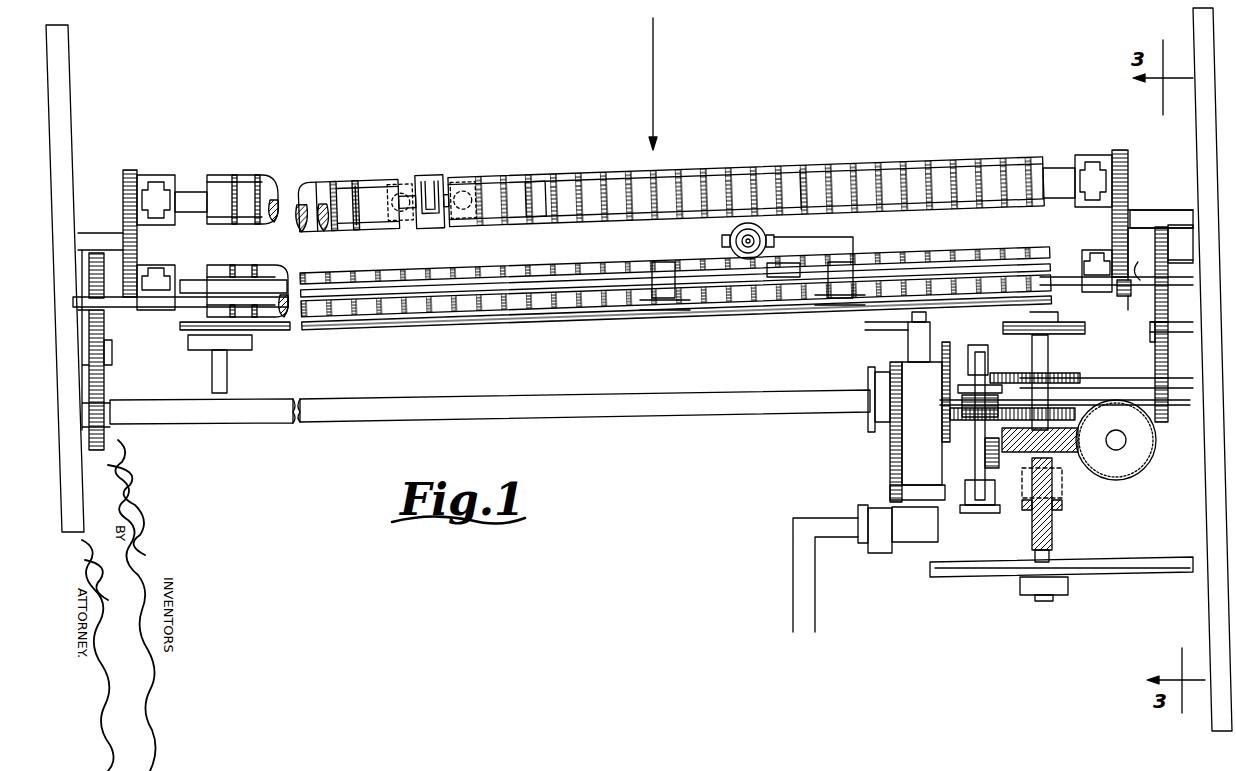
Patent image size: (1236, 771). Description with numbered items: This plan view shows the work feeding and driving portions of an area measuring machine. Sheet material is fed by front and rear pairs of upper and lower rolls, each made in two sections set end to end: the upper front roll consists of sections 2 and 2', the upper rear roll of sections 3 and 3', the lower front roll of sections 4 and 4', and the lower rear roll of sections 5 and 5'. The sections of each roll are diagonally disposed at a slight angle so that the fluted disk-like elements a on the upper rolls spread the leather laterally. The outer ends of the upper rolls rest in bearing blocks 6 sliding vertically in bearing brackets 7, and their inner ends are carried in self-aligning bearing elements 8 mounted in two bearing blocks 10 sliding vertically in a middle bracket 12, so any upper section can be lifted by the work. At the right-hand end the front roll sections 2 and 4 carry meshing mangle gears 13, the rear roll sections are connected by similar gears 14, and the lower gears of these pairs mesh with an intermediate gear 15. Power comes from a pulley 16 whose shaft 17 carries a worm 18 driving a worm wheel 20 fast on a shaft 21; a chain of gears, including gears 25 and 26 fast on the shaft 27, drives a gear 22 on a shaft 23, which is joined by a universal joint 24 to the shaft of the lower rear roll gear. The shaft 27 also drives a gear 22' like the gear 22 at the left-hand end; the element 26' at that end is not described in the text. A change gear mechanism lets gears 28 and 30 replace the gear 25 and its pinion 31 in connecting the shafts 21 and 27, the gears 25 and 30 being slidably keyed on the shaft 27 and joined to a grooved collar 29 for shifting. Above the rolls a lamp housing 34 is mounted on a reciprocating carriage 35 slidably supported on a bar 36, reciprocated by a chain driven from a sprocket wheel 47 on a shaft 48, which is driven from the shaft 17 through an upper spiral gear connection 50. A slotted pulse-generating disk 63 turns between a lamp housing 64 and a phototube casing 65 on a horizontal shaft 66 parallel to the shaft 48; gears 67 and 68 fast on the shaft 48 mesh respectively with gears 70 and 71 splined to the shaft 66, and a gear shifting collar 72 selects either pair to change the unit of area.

The upper front roll section 2 is at (535, 184).
The upper front roll section 2' is at (358, 192).
The upper rear roll section 3 is at (676, 306).
The upper rear roll section 3' is at (288, 356).
The lower front roll section 4 is at (746, 179).
The lower front roll section 4' is at (347, 192).
The lower rear roll section 5 is at (675, 254).
The lower rear roll section 5' is at (237, 286).
The bearing block 6 is at (170, 192).
The bearing bracket 7 is at (150, 180).
The self-aligning bearing element 8 is at (392, 186).
The bearing block 10 is at (434, 186).
The bracket 12 is at (428, 232).
The mangle gear 13 is at (1128, 165).
The gear 14 is at (1132, 262).
The intermediate gear 15 is at (1130, 212).
The pulley 16 is at (1138, 575).
The pulley shaft 17 is at (1050, 556).
The worm 18 is at (1062, 506).
The worm wheel 20 is at (1032, 532).
The shaft 21 is at (1062, 490).
The gear 22 is at (1180, 244).
The gear 22' is at (180, 296).
The shaft 23 is at (1184, 265).
The universal joint 24 is at (1138, 284).
The gear 25 is at (942, 358).
The gear 26 is at (1145, 372).
The left drive gear 26' is at (115, 380).
The shaft 27 is at (760, 392).
The change gear 28 is at (890, 468).
The grooved collar 29 is at (868, 420).
The change gear 30 is at (888, 434).
The pinion 31 is at (990, 470).
The lamp housing 34 is at (728, 236).
The reciprocating carriage 35 is at (704, 318).
The bar 36 is at (615, 312).
The sprocket wheel 47 is at (1070, 328).
The shaft 48 is at (1048, 360).
The upper spiral gear connection 50 is at (1096, 418).
The disk 63 is at (930, 515).
The lamp housing 64 is at (912, 370).
The casing 65 is at (905, 540).
The horizontal shaft 66 is at (980, 470).
The gear 67 is at (1070, 372).
The gear 68 is at (1028, 408).
The gear 70 is at (962, 390).
The gear 71 is at (966, 418).
The gear shifting collar 72 is at (984, 372).
The fluted disk-like element a is at (346, 188).